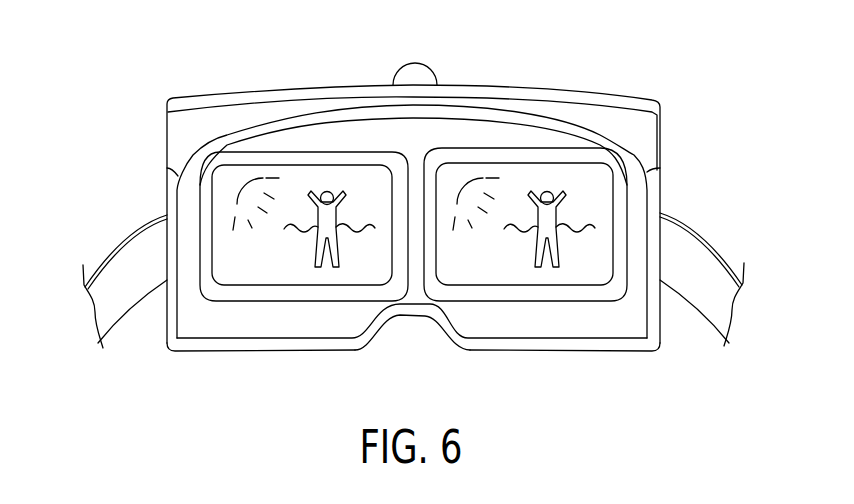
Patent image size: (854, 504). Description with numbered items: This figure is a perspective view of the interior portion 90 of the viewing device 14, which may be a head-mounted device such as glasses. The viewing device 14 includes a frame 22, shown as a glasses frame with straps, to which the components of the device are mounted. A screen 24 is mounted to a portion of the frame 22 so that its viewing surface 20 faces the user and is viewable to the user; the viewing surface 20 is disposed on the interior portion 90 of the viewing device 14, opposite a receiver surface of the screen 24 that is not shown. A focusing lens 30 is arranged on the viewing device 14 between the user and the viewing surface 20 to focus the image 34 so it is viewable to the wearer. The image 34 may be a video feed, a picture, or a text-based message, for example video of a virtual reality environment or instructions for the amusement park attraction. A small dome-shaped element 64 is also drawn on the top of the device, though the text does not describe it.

The viewing device 14 is at (204, 78).
The viewing surface 20 is at (260, 260).
The frame 22 is at (708, 243).
The screen 24 is at (145, 107).
The focusing lens 30 is at (303, 150).
The image 34 is at (364, 258).
The camera 64 is at (413, 74).
The interior portion 90 is at (305, 430).